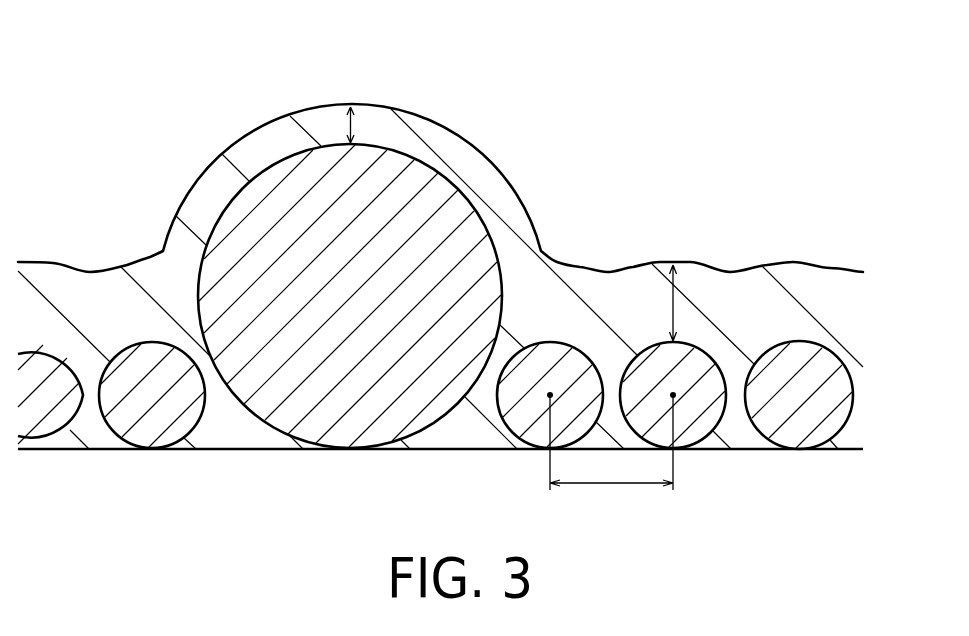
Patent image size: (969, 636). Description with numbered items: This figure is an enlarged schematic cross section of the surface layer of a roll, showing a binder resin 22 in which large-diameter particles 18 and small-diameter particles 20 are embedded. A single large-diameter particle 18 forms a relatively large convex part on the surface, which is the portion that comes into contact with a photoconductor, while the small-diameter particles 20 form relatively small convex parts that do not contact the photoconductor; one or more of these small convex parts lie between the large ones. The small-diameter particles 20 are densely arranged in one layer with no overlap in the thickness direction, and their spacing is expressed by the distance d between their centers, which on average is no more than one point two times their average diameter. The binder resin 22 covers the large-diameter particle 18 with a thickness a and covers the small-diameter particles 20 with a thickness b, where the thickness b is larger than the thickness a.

The large-diameter particles 18 is at (410, 218).
The small-diameter particles 20 is at (810, 380).
The binder resin 22 is at (810, 283).
The thickness of the binder resin covering the large-diameter particles a is at (353, 127).
The thickness of the binder resin covering the small-diameter particles b is at (677, 302).
The distance between the centers of the small-diameter particles d is at (611, 457).